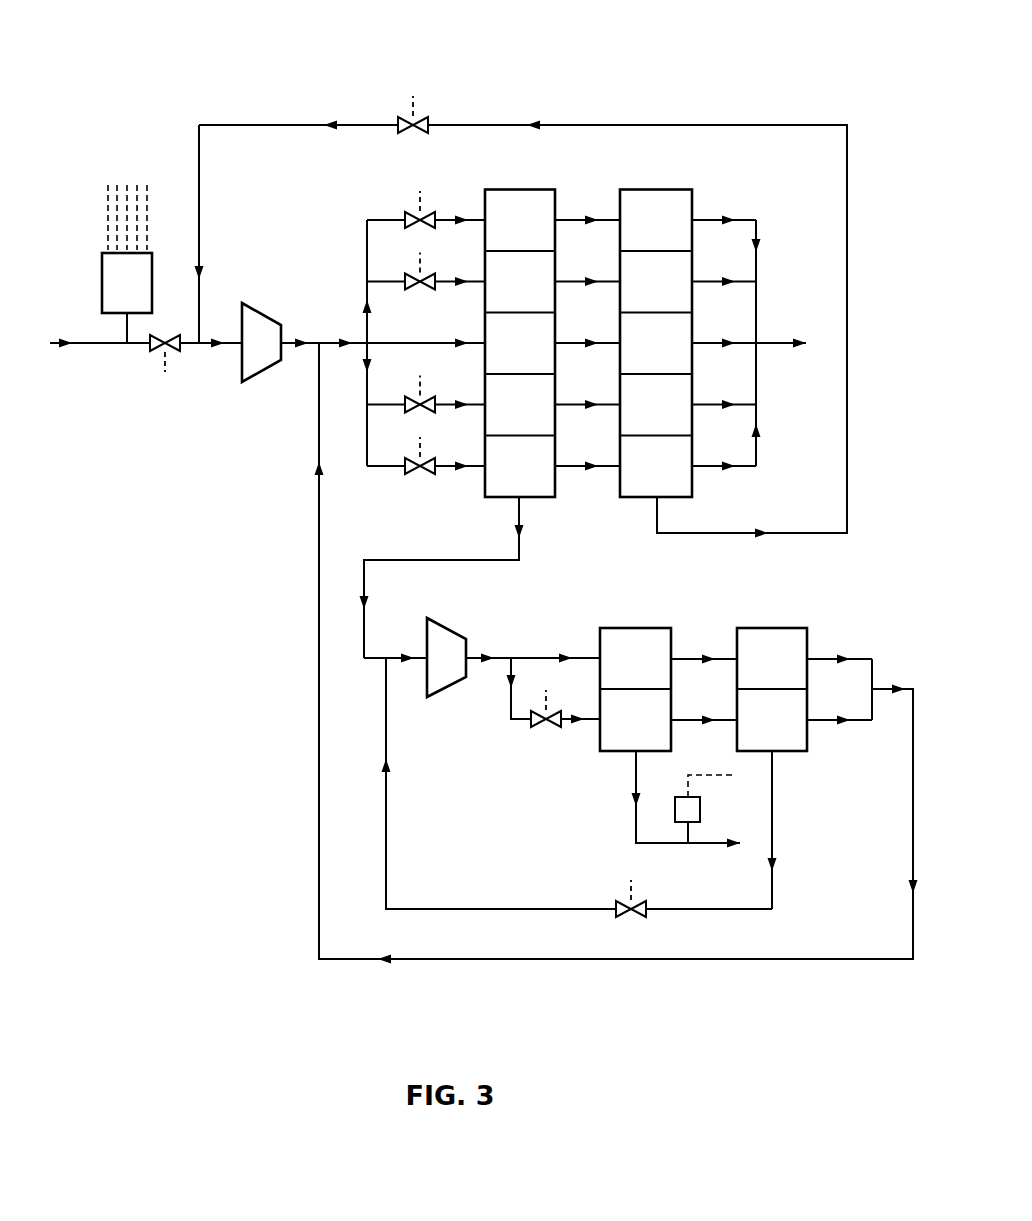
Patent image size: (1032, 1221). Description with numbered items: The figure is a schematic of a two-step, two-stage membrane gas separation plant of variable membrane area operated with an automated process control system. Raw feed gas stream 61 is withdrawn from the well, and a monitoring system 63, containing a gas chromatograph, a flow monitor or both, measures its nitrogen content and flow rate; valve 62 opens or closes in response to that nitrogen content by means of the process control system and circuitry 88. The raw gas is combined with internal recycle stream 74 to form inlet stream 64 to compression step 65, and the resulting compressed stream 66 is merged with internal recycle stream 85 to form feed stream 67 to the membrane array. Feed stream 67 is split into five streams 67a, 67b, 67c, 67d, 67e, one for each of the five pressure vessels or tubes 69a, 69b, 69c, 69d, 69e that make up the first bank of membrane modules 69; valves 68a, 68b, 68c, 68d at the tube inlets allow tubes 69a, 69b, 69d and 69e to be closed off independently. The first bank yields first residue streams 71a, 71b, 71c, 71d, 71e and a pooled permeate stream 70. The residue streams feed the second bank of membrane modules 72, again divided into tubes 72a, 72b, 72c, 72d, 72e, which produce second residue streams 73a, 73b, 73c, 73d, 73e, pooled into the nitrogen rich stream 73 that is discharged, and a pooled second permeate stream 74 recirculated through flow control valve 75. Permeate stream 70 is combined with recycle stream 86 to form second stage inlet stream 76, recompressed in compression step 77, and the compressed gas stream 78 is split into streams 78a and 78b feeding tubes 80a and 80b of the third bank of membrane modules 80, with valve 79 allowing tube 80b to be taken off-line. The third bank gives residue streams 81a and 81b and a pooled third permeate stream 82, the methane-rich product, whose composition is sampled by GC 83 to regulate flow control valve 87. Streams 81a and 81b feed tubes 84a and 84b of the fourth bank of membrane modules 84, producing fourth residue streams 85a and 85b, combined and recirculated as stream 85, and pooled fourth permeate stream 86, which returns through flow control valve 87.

The raw feed gas stream 61 is at (146, 354).
The valve 62 is at (154, 351).
The monitoring system 63 is at (101, 293).
The inlet stream 64 is at (217, 354).
The compression step 65 is at (266, 382).
The compressed stream 66 is at (300, 332).
The feed stream 67 is at (346, 343).
The feed stream 67a is at (426, 211).
The feed stream 67b is at (426, 272).
The feed stream 67c is at (426, 334).
The feed stream 67d is at (426, 395).
The feed stream 67e is at (426, 457).
The valve 68a is at (402, 215).
The valve 68b is at (402, 276).
The valve 68c is at (402, 399).
The valve 68d is at (402, 461).
The first bank of membrane modules 69 is at (520, 321).
The membrane module tube 69a is at (520, 221).
The membrane module tube 69b is at (520, 282).
The membrane module tube 69c is at (520, 344).
The membrane module tube 69d is at (520, 405).
The membrane module tube 69e is at (520, 467).
The permeate stream 70 is at (456, 577).
The first residue stream 71a is at (587, 211).
The first residue stream 71b is at (587, 272).
The first residue stream 71c is at (587, 334).
The first residue stream 71d is at (587, 395).
The first residue stream 71e is at (587, 457).
The second bank of membrane modules 72 is at (656, 321).
The membrane module tube 72a is at (656, 221).
The membrane module tube 72b is at (656, 282).
The membrane module tube 72c is at (656, 344).
The membrane module tube 72d is at (656, 405).
The membrane module tube 72e is at (656, 467).
The nitrogen rich stream 73 is at (782, 343).
The second residue stream 73a is at (724, 210).
The second residue stream 73b is at (724, 271).
The second residue stream 73c is at (724, 333).
The second residue stream 73d is at (724, 394).
The second residue stream 73e is at (724, 456).
The second permeate stream 74 is at (752, 517).
The flow control valve 75 is at (426, 120).
The second stage inlet stream 76 is at (395, 647).
The compression step 77 is at (446, 698).
The compressed gas stream 78 is at (488, 647).
The feed stream 78a is at (555, 647).
The feed stream 78b is at (534, 691).
The valve 79 is at (550, 728).
The third bank of membrane modules 80 is at (635, 667).
The membrane module tube 80a is at (635, 658).
The membrane module tube 80b is at (635, 720).
The third residue stream 81a is at (704, 650).
The third residue stream 81b is at (704, 710).
The third permeate stream 82 is at (671, 799).
The GC 83 is at (701, 812).
The fourth bank of membrane modules 84 is at (772, 667).
The membrane module tube 84a is at (772, 658).
The membrane module tube 84b is at (772, 720).
The internal recycle stream 85 is at (616, 653).
The fourth residue stream 85a is at (839, 650).
The fourth residue stream 85b is at (839, 710).
The fourth permeate stream 86 is at (784, 830).
The flow control valve 87 is at (640, 916).
The process control system and circuitry 88 is at (151, 184).